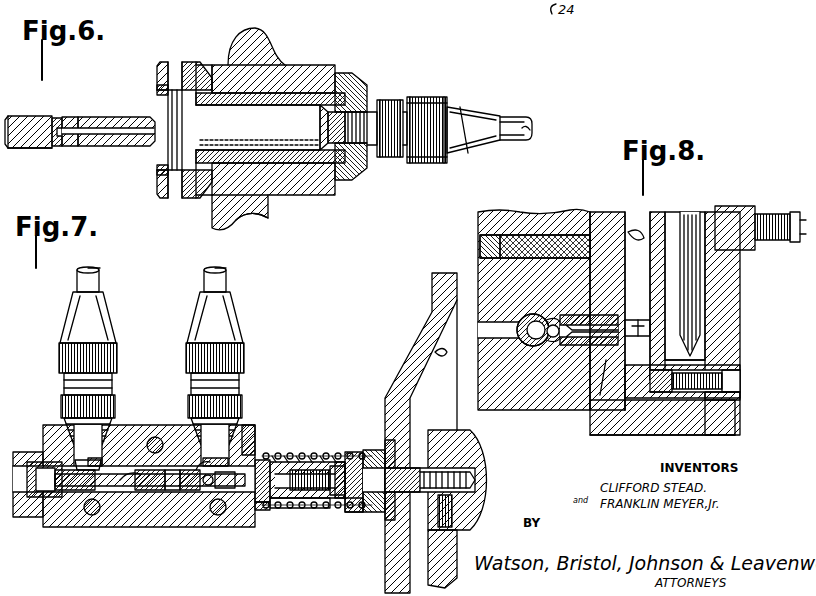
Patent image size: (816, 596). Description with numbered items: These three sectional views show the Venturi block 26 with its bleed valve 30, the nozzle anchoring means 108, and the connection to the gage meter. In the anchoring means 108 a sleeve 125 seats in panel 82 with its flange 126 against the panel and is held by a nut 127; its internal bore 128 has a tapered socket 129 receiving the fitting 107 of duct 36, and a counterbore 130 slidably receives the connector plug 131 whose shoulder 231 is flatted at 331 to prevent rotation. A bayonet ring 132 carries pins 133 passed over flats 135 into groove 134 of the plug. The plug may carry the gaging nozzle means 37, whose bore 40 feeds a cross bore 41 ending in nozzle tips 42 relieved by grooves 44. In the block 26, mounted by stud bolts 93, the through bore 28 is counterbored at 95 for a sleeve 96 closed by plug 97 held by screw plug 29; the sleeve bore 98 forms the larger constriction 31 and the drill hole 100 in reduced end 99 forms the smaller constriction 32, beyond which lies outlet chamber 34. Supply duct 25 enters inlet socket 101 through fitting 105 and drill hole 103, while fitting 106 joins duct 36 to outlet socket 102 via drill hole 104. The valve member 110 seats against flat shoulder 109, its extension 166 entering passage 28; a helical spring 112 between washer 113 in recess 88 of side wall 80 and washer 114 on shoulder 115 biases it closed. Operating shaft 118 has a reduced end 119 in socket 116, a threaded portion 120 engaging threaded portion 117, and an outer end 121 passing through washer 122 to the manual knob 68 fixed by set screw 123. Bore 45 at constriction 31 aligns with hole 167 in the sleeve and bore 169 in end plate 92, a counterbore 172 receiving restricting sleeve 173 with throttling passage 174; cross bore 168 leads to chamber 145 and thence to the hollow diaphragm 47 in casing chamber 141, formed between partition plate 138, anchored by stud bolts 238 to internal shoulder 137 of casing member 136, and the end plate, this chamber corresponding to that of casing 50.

In FIG. 6, the gaging nozzle means 37 is at (30, 116).
In FIG. 6, the longitudinally-extending grooves 44 is at (30, 148).
In FIG. 6, the nozzle tips 42 is at (57, 118).
In FIG. 6, the cross bore 41 is at (72, 118).
In FIG. 6, the longitudinally extending bore 40 is at (112, 125).
In FIG. 6, the pins 133 is at (166, 62).
In FIG. 6, the circumferential groove 134 is at (170, 150).
In FIG. 6, the flats 135 is at (160, 86).
In FIG. 6, the bayonet ring 132 is at (188, 62).
In FIG. 6, the flats 331 is at (198, 62).
In FIG. 6, the lower vertical front wall panel 82 is at (236, 36).
In FIG. 6, the connector plug 131 is at (286, 66).
In FIG. 6, the circumferential shoulder 231 is at (200, 120).
In FIG. 6, the gaging nozzle anchoring means 108 is at (206, 200).
In FIG. 6, the circumferential flange 126 is at (212, 196).
In FIG. 6, the counterbore 130 is at (290, 150).
In FIG. 6, the sleeve 125 is at (325, 152).
In FIG. 6, the nut 127 is at (352, 74).
In FIG. 6, the internal bore 128 is at (335, 181).
In FIG. 6, the internally-threaded tapered socket 129 is at (378, 100).
In FIG. 6, the fitting 107 is at (436, 97).
In FIG. 6, the duct 36 is at (514, 117).
In FIG. 7, the duct 36 is at (228, 274).
In FIG. 7, the supply duct 25 is at (102, 274).
In FIG. 7, the fitting 105 is at (58, 348).
In FIG. 7, the fitting 106 is at (244, 352).
In FIG. 7, the Venturi block 26 is at (46, 417).
In FIG. 8, the Venturi block 26 is at (476, 248).
In FIG. 7, the stud bolts 93 is at (157, 437).
In FIG. 7, the screw plug 29 is at (22, 452).
In FIG. 7, the plug 97 is at (30, 498).
In FIG. 7, the sleeve 96 is at (45, 498).
In FIG. 8, the sleeve 96 is at (530, 347).
In FIG. 7, the Venturi constriction 31 is at (120, 487).
In FIG. 8, the Venturi constriction 31 is at (536, 235).
In FIG. 7, the drill hole 103 is at (80, 491).
In FIG. 7, the inlet socket 101 is at (78, 442).
In FIG. 7, the internal bore 98 is at (98, 458).
In FIG. 7, the drill hole 100 is at (136, 474).
In FIG. 7, the drill hole 104 is at (208, 470).
In FIG. 7, the counterbore 95 is at (140, 492).
In FIG. 7, the Venturi constriction 32 is at (170, 492).
In FIG. 7, the reduced end 99 is at (190, 492).
In FIG. 7, the through bore 28 is at (206, 488).
In FIG. 8, the through bore 28 is at (552, 338).
In FIG. 7, the outlet chamber 34 is at (226, 492).
In FIG. 7, the outlet socket 102 is at (248, 425).
In FIG. 7, the valve extension 166 is at (262, 460).
In FIG. 7, the bleed valve 30 is at (292, 452).
In FIG. 7, the washer 114 is at (296, 452).
In FIG. 7, the reduced end portion 119 is at (322, 452).
In FIG. 7, the valve member 110 is at (300, 492).
In FIG. 7, the flat shoulder 109 is at (262, 512).
In FIG. 7, the shoulder 115 is at (290, 510).
In FIG. 7, the socket 116 is at (334, 496).
In FIG. 7, the helical spring 112 is at (342, 460).
In FIG. 7, the enlarged portion 120 is at (350, 514).
In FIG. 7, the enlarged portion 117 is at (364, 448).
In FIG. 7, the operating shaft 118 is at (374, 514).
In FIG. 7, the washer 113 is at (388, 522).
In FIG. 7, the side wall 80 is at (432, 282).
In FIG. 7, the recess 88 is at (435, 354).
In FIG. 7, the manual knob 68 is at (488, 480).
In FIG. 7, the outer reduced end 121 is at (412, 468).
In FIG. 7, the washer 122 is at (428, 468).
In FIG. 7, the set screw 123 is at (440, 527).
In FIG. 8, the bore 45 is at (550, 318).
In FIG. 8, the throttling passage 174 is at (576, 315).
In FIG. 8, the restricting sleeve 173 is at (600, 315).
In FIG. 8, the chamber 145 is at (638, 225).
In FIG. 8, the cross bore 168 is at (676, 230).
In FIG. 8, the hollow diaphragm 47 is at (700, 300).
In FIG. 8, the casing chamber 141 is at (702, 336).
In FIG. 8, the partition plate 138 is at (718, 282).
In FIG. 8, the stud bolts 238 is at (732, 368).
In FIG. 8, the internal shoulder 137 is at (736, 394).
In FIG. 8, the cylindrical casing member 136 is at (736, 412).
In FIG. 8, the casing 50 is at (698, 440).
In FIG. 8, the counterbore 172 is at (580, 347).
In FIG. 8, the hole 167 is at (565, 350).
In FIG. 8, the bore 169 is at (602, 398).
In FIG. 8, the end plate 92 is at (618, 412).